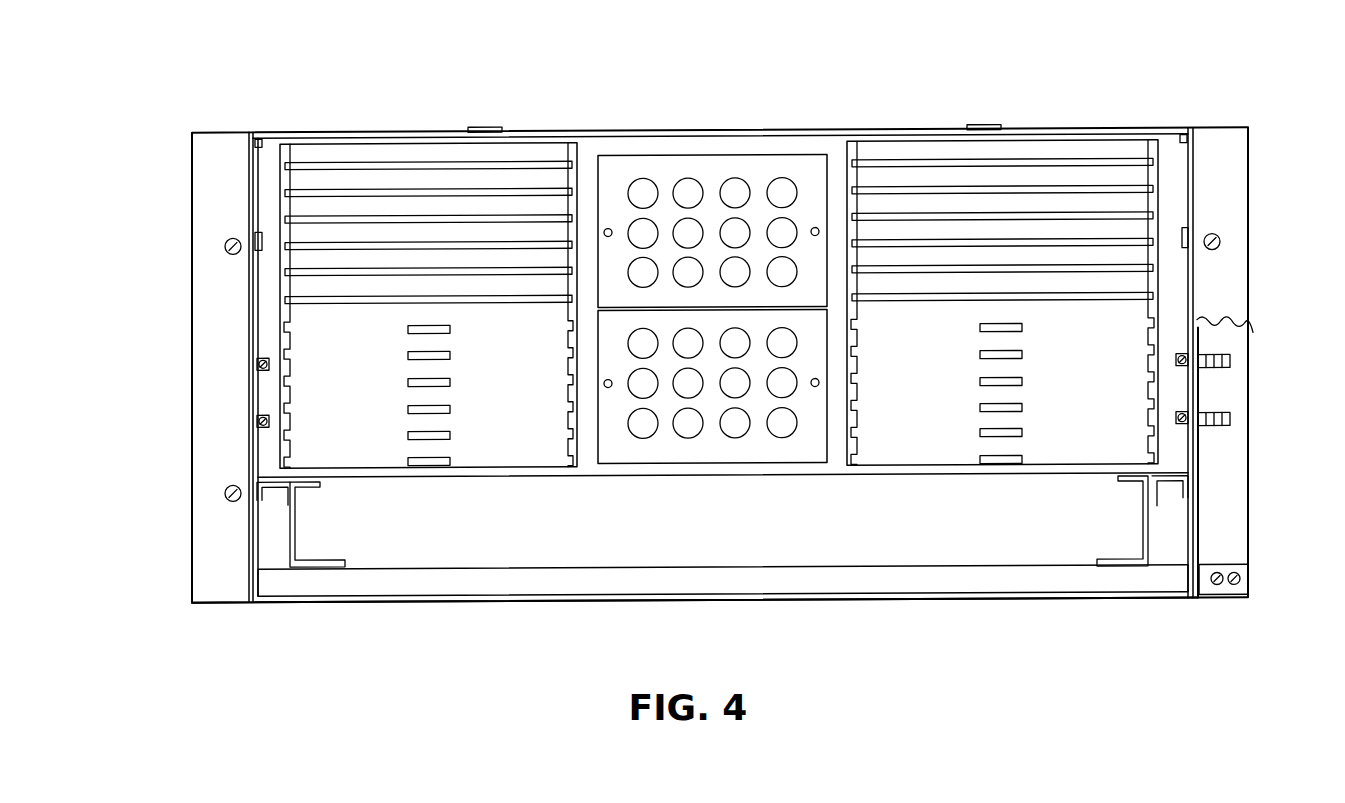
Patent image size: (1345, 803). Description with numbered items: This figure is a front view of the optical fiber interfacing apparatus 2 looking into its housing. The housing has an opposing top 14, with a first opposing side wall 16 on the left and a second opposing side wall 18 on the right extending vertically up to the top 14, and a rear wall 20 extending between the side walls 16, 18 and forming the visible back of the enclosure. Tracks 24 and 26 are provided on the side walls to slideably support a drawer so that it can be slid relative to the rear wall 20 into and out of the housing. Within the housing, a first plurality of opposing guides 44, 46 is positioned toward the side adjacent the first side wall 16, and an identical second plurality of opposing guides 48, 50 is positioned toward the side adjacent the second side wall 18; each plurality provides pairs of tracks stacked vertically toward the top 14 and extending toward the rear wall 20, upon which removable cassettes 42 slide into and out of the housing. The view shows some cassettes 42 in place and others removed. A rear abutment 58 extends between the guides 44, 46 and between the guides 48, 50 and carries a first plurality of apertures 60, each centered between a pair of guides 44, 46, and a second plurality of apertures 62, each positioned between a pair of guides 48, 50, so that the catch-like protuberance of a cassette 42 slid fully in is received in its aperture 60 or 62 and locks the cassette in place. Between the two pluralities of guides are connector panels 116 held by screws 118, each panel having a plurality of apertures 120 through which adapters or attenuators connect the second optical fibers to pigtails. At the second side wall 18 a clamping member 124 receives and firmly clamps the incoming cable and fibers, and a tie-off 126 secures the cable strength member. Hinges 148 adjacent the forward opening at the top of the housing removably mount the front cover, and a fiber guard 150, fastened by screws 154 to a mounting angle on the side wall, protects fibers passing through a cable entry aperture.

The apparatus 2 is at (1250, 504).
The top 14 is at (745, 132).
The first opposing side wall 16 is at (242, 348).
The second opposing side wall 18 is at (1196, 299).
The rear wall 20 is at (917, 532).
The track 24 is at (1143, 518).
The track 26 is at (298, 543).
The removable cassette 42 is at (408, 160).
The opposing guide 44 is at (292, 300).
The opposing guide 46 is at (556, 142).
The opposing guide 48 is at (1144, 142).
The opposing guide 50 is at (862, 148).
The rear abutment 58 is at (361, 408).
The aperture 60 is at (443, 333).
The aperture 62 is at (987, 330).
The connector panel 116 is at (810, 142).
The screw 118 is at (609, 228).
The aperture 120 is at (688, 180).
The clamping member 124 is at (1231, 414).
The tie-off 126 is at (1250, 591).
The hinge 148 is at (485, 127).
The fiber guard 150 is at (1250, 279).
The screw 154 is at (225, 488).